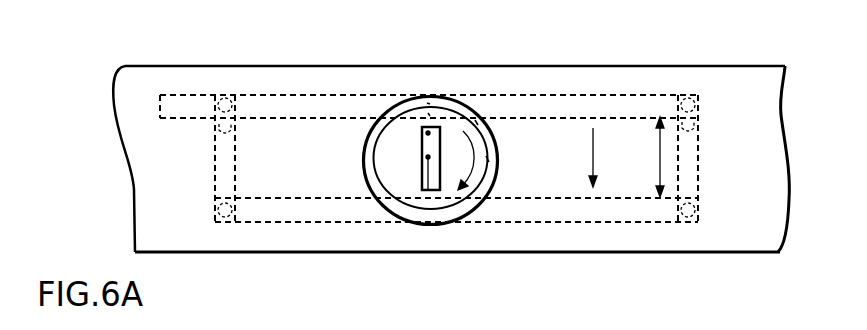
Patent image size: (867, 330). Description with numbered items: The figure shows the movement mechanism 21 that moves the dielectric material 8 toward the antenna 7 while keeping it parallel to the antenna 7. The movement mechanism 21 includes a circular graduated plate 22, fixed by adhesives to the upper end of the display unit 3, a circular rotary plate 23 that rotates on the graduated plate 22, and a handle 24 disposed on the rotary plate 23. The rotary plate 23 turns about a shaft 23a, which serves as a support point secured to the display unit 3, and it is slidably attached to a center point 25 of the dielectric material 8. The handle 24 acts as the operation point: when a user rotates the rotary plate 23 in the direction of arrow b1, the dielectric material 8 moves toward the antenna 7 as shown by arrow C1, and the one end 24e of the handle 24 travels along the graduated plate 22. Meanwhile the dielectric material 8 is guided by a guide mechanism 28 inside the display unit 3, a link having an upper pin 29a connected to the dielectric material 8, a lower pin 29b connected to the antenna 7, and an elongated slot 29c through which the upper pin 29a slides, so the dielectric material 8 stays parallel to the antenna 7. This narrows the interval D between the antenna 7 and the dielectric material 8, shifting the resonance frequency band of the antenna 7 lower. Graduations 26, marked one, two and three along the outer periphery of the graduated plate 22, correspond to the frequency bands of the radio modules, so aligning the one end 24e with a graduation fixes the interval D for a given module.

The display unit 3 is at (705, 73).
The antenna 7 is at (615, 222).
The dielectric material 8 is at (610, 95).
The movement mechanism 21 is at (360, 108).
The circular graduated plate 22 is at (407, 97).
The circular rotary plate 23 is at (457, 120).
The shaft 23a is at (428, 190).
The handle 24 is at (426, 157).
The one end of the handle 24e is at (426, 133).
The center point of the dielectric material 25 is at (429, 113).
The graduations 26 is at (483, 124).
The guide mechanism 28 is at (216, 170).
The upper pin 29a is at (224, 97).
The lower pin 29b is at (226, 218).
The slot 29c is at (215, 130).
The rotation direction arrow b1 is at (488, 160).
The movement direction arrow C1 is at (602, 157).
The interval D is at (668, 157).